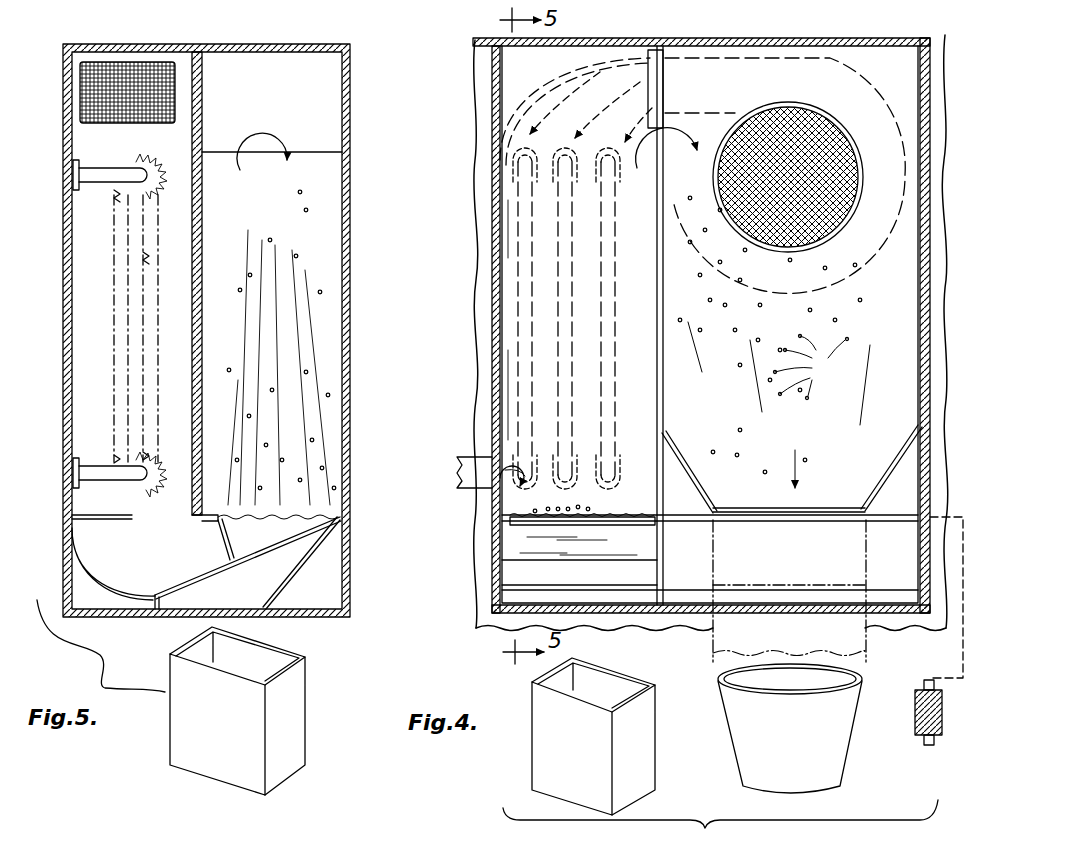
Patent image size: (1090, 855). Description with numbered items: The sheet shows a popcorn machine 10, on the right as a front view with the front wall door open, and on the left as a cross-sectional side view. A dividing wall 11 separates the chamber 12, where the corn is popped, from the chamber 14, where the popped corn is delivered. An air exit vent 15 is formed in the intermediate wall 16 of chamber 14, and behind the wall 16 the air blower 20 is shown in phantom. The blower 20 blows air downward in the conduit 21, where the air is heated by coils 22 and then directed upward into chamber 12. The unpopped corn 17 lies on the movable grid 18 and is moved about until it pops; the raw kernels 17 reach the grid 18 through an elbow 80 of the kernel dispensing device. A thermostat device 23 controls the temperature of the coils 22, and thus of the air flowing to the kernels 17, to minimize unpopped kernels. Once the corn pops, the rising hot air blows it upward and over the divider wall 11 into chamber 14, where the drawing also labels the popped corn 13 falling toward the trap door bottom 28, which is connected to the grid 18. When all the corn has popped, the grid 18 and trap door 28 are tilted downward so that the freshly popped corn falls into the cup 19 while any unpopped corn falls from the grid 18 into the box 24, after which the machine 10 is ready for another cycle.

In FIG. 4, the popcorn machine 10 is at (465, 74).
In FIG. 4, the dividing wall 11 is at (660, 403).
In FIG. 5, the chamber 12 is at (274, 228).
In FIG. 4, the chamber 12 is at (664, 298).
In FIG. 4, the paint spray particles 13 is at (811, 367).
In FIG. 4, the chamber 14 is at (898, 318).
In FIG. 4, the air exit vent 15 is at (810, 86).
In FIG. 4, the intermediate wall 16 is at (900, 78).
In FIG. 5, the unpopped corn 17 is at (320, 492).
In FIG. 4, the unpopped corn 17 is at (510, 520).
In FIG. 5, the movable grid 18 is at (338, 518).
In FIG. 4, the movable grid 18 is at (620, 516).
In FIG. 4, the cup 19 is at (800, 753).
In FIG. 4, the air blower 20 is at (855, 80).
In FIG. 5, the conduit 21 is at (134, 62).
In FIG. 4, the conduit 21 is at (498, 90).
In FIG. 5, the coils 22 is at (114, 226).
In FIG. 4, the coils 22 is at (572, 392).
In FIG. 5, the thermostat device 23 is at (88, 517).
In FIG. 5, the box 24 is at (236, 728).
In FIG. 4, the box 24 is at (594, 754).
In FIG. 4, the trap door bottom 28 is at (845, 508).
In FIG. 4, the elbow 80 is at (515, 512).